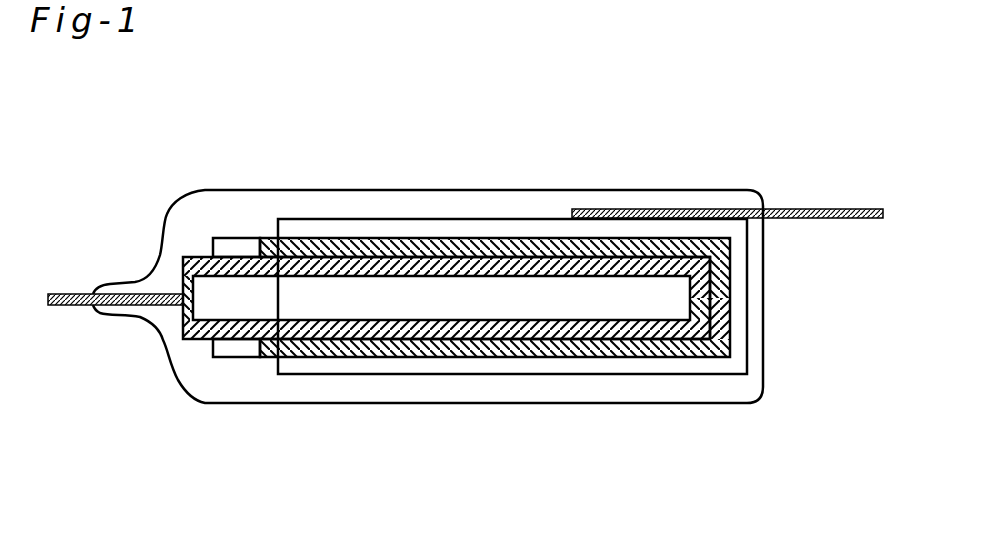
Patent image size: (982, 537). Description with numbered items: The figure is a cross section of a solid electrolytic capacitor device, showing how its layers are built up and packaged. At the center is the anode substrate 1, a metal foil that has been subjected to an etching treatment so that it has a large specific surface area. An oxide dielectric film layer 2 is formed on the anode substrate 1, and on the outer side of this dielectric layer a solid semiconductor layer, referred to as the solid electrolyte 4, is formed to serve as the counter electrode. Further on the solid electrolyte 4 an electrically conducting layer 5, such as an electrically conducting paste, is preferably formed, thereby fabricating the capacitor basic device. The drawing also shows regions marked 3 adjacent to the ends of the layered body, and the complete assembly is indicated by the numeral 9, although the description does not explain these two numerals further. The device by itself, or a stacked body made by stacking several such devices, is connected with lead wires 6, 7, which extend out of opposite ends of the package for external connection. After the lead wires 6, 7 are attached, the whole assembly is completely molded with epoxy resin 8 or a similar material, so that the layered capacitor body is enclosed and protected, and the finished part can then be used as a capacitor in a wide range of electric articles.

The anode substrate 1 is at (228, 303).
The oxide dielectric film layer 2 is at (372, 262).
The terminal electrode 3 is at (242, 250).
The solid electrolyte 4 is at (460, 246).
The electrically conducting layer 5 is at (182, 308).
The lead wire 6 is at (83, 293).
The lead wire 7 is at (812, 209).
The epoxy resin 8 is at (650, 383).
The electronic component 9 is at (698, 155).